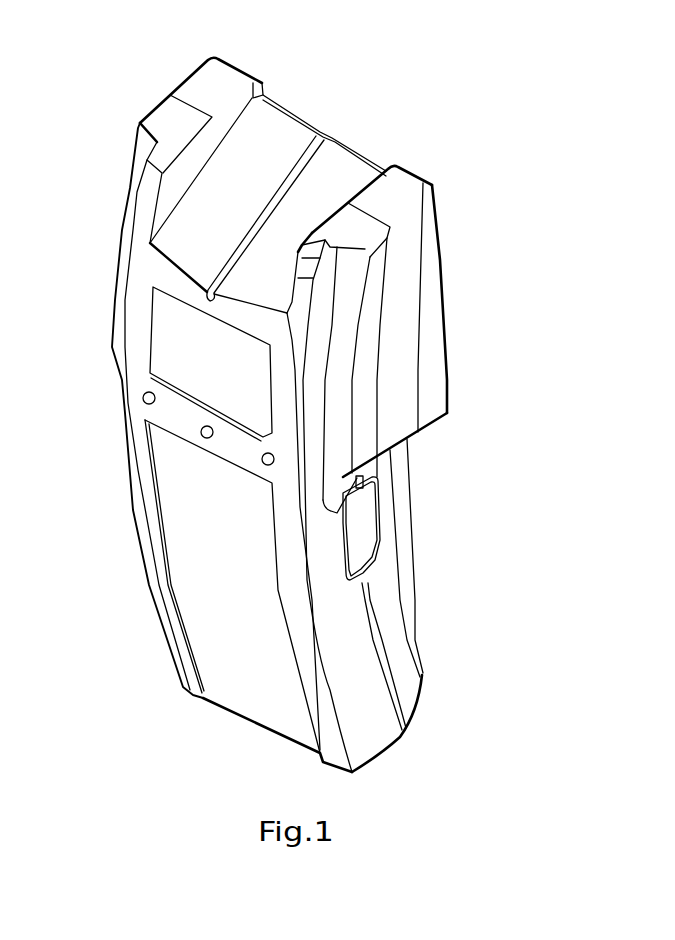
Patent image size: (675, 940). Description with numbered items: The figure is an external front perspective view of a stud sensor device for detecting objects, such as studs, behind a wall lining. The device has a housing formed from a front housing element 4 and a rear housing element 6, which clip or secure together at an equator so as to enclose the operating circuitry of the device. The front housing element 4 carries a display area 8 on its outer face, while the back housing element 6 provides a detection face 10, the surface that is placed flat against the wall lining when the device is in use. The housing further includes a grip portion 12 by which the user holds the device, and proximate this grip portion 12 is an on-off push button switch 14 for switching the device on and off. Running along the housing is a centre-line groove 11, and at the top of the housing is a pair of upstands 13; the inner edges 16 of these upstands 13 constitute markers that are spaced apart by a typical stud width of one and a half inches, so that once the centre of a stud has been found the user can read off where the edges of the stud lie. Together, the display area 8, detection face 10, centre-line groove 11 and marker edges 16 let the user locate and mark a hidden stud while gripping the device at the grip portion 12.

The front housing element 4 is at (375, 745).
The rear housing element 6 is at (413, 678).
The display area 8 is at (168, 342).
The detection face 10 is at (462, 288).
The centre-line groove 11 is at (330, 132).
The grip portion 12 is at (440, 167).
The upstands 13 is at (162, 121).
The on-off push button switch 14 is at (365, 525).
The inner edges 16 is at (263, 86).